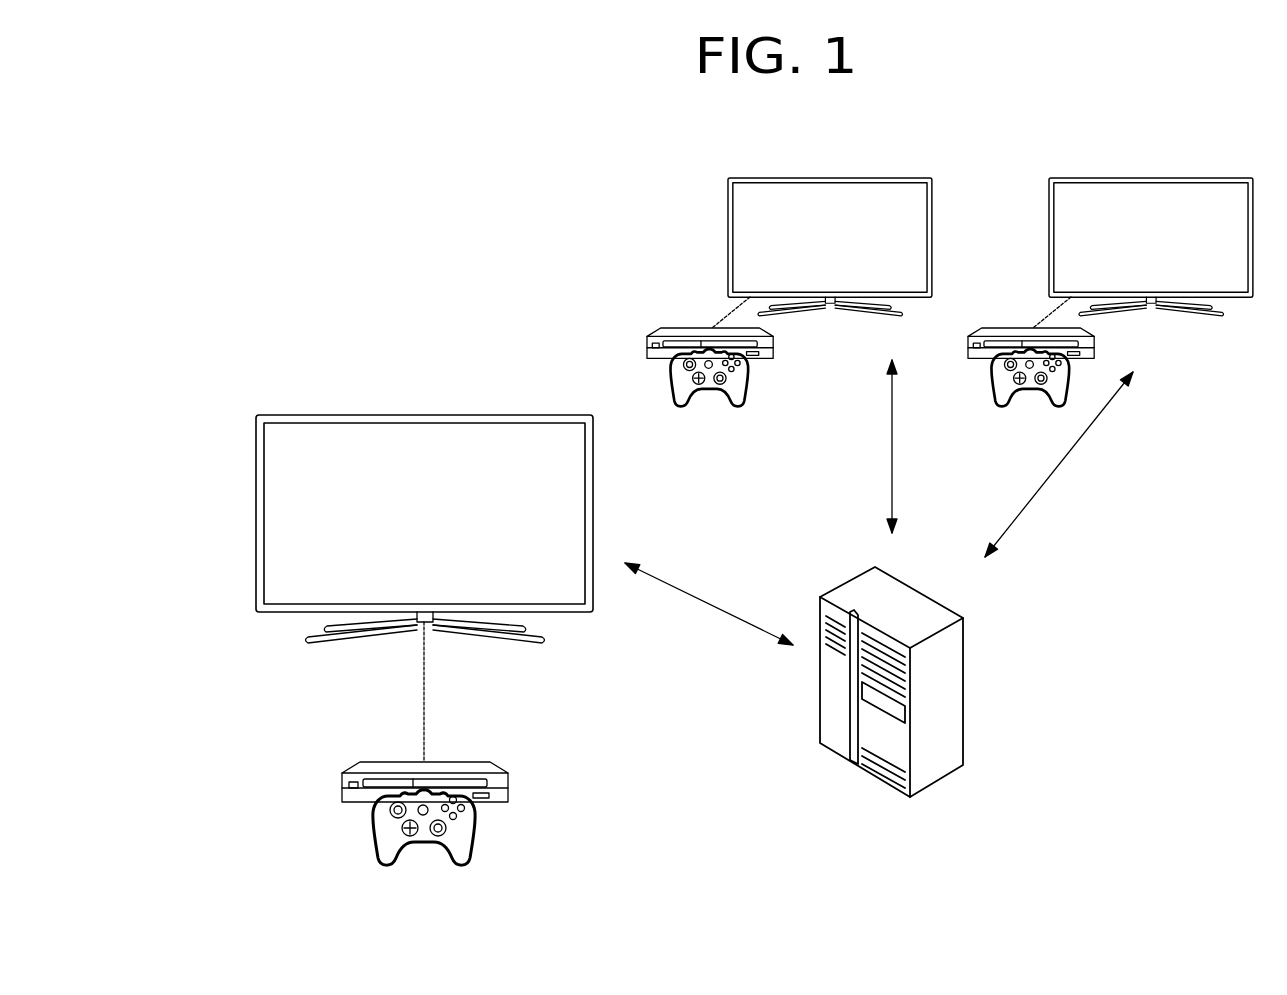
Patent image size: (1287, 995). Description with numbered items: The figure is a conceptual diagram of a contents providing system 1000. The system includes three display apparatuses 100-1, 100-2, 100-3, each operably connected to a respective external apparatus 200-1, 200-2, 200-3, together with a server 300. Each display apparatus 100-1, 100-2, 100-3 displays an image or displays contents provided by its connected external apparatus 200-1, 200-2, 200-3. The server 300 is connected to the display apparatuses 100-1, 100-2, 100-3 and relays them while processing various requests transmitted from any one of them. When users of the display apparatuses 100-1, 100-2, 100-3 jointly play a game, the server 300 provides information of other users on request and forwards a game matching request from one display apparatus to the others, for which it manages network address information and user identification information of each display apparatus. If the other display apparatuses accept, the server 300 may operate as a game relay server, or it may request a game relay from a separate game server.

The contents providing system 1000 is at (752, 110).
The display apparatus 100-1 is at (497, 414).
The display apparatus 100-2 is at (893, 178).
The display apparatus 100-3 is at (1215, 178).
The external apparatus 200-1 is at (373, 762).
The external apparatus 200-2 is at (673, 328).
The external apparatus 200-3 is at (994, 328).
The server 300 is at (925, 592).